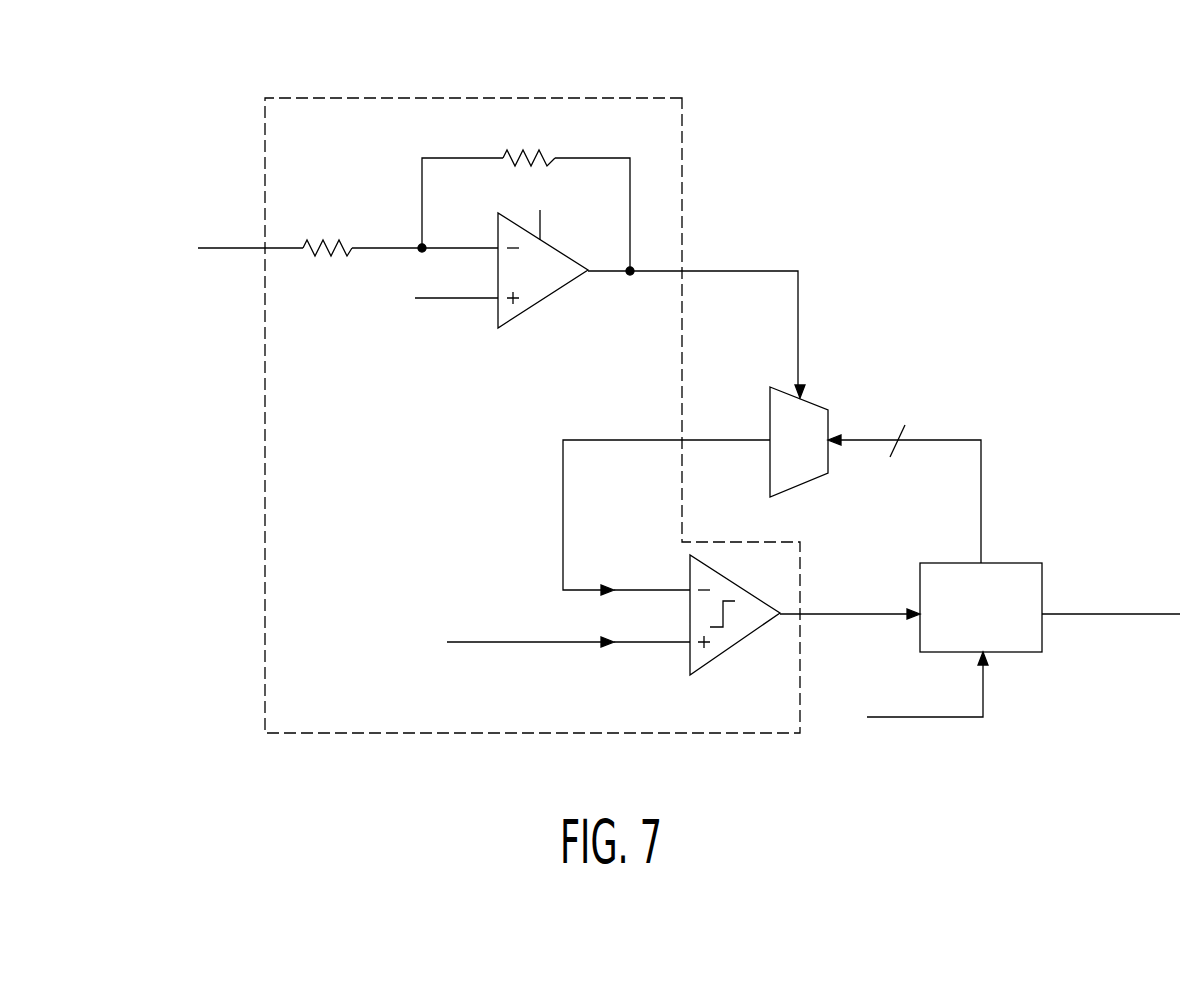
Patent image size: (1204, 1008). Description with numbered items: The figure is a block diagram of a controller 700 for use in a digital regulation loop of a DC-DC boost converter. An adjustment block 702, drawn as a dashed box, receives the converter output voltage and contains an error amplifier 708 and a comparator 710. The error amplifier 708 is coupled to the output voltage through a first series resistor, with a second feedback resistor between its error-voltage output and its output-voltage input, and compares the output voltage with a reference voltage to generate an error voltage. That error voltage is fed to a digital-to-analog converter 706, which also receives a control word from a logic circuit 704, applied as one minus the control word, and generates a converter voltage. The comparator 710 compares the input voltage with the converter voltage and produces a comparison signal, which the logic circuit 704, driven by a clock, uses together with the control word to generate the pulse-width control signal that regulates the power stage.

The controller 700 is at (981, 170).
The adjustment block 702 is at (380, 97).
The logic circuit 704 is at (1020, 562).
The DAC 706 is at (826, 408).
The error amplifier 708 is at (560, 247).
The comparator 710 is at (688, 572).